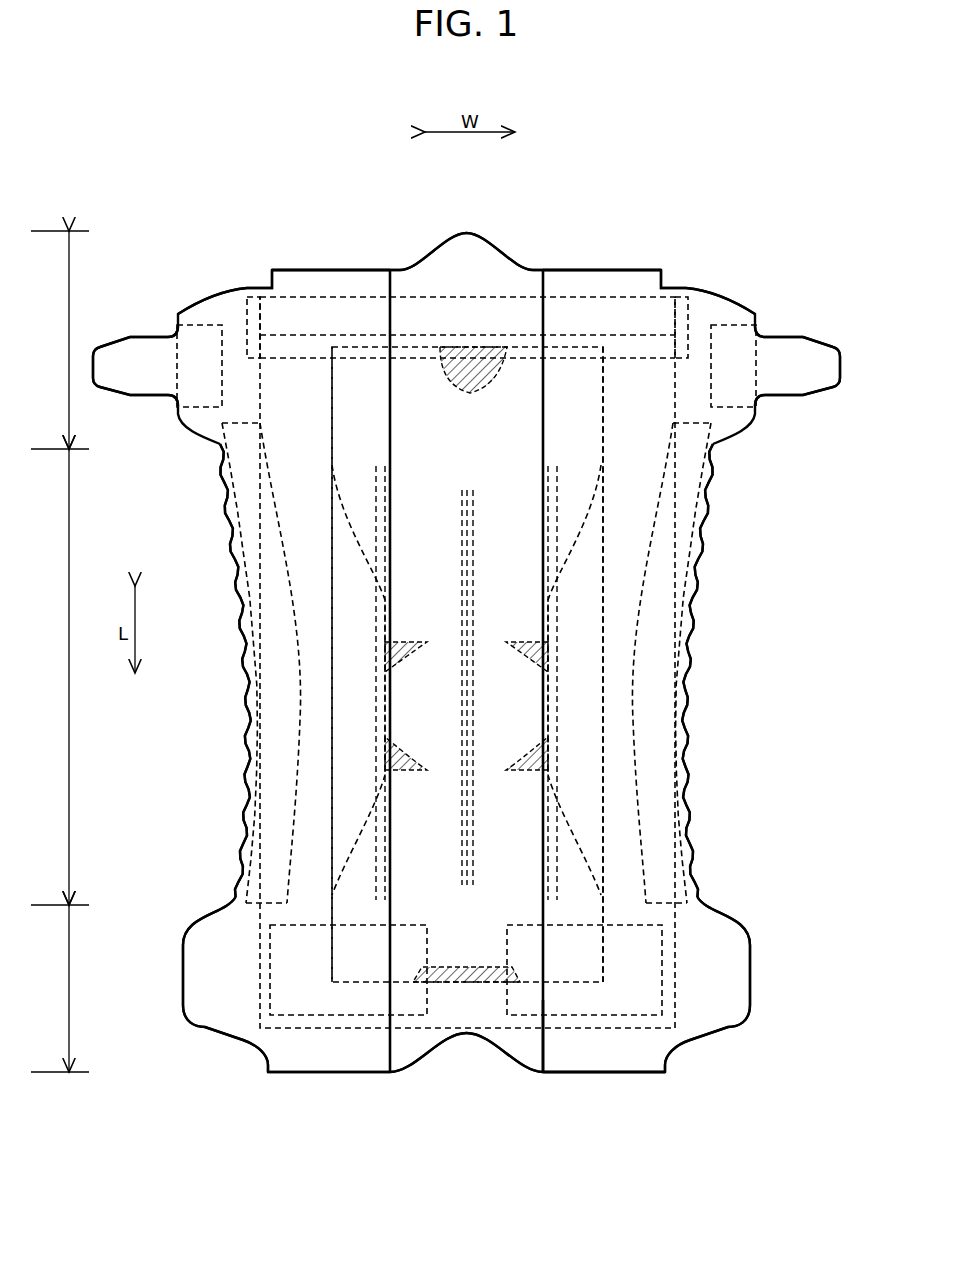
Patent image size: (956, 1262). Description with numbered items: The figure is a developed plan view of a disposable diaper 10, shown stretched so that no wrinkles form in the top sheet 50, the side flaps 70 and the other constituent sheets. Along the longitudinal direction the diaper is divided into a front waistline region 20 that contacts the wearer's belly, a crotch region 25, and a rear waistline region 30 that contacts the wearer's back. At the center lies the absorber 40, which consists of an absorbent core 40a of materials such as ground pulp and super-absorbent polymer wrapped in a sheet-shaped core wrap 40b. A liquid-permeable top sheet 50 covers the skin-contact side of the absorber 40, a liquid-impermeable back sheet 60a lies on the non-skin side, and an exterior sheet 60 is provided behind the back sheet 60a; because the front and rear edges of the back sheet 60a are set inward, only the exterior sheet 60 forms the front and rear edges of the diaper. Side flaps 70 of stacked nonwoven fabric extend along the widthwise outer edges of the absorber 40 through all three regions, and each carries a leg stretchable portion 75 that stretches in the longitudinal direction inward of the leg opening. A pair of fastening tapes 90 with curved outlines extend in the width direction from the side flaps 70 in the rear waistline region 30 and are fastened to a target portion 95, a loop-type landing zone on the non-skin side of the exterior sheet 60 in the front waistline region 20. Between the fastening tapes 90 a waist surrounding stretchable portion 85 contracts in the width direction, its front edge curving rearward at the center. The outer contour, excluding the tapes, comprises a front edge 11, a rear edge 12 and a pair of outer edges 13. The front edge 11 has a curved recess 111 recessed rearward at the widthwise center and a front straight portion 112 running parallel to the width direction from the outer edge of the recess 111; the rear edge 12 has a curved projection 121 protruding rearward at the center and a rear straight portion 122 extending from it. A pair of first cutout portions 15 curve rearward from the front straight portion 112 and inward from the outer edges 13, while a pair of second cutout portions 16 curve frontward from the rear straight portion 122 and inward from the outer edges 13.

The disposable diaper 10 is at (752, 263).
The front edge 11 is at (363, 1076).
The rear edge 12 is at (578, 268).
The outer edges 13 is at (220, 507).
The first cutout portions 15 is at (213, 1032).
The second cutout portions 16 is at (246, 290).
The front waistline region 20 is at (59, 988).
The crotch region 25 is at (59, 677).
The rear waistline region 30 is at (60, 340).
The absorber 40 is at (605, 812).
The absorbent core 40a is at (563, 565).
The core wrap 40b is at (603, 522).
The top sheet 50 is at (396, 276).
The exterior sheet 60 is at (401, 1046).
The back sheet 60a is at (563, 1028).
The side flaps 70 is at (316, 270).
The leg stretchable portions 75 is at (660, 702).
The waist surrounding stretchable portion 85 is at (243, 307).
The fastening tapes 90 is at (127, 340).
The target portion 95 is at (268, 1006).
The recess 111 is at (493, 1044).
The front straight portion 112 is at (605, 1073).
The projection 121 is at (478, 232).
The rear straight portion 122 is at (652, 266).